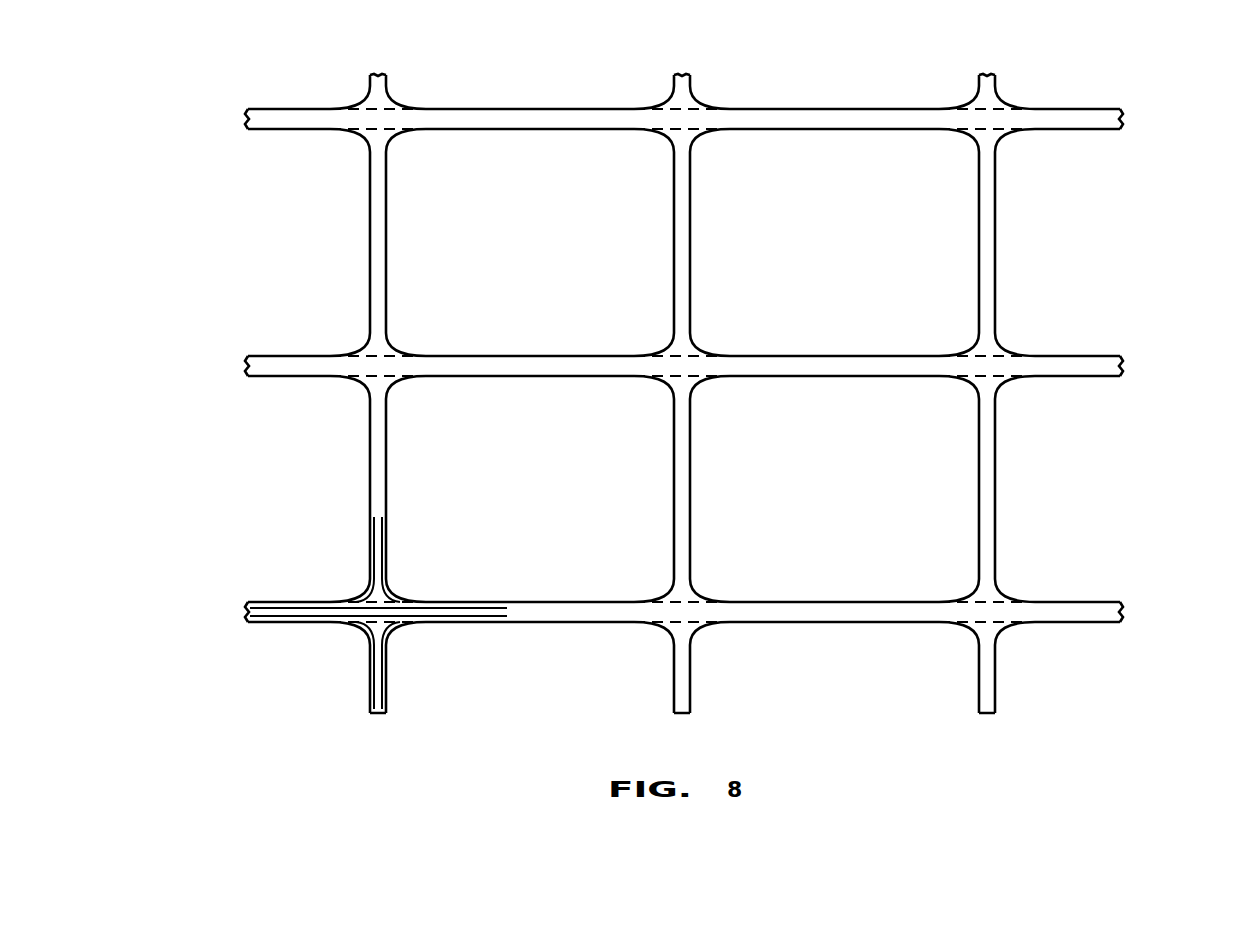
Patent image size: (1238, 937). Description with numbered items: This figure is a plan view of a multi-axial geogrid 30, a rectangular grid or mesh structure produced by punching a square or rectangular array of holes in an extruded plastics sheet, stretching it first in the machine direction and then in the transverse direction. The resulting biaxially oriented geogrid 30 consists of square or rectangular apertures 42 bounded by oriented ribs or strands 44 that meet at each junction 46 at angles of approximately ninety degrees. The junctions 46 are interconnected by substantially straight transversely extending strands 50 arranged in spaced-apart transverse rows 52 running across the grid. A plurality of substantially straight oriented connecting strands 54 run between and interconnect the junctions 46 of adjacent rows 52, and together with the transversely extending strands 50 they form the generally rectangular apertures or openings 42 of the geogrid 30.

The multi-axial geogrid 30 is at (345, 214).
The apertures 42 is at (548, 243).
The strands 44 is at (502, 115).
The junction 46 is at (685, 118).
The transversely extending strands 50 is at (568, 124).
The transverse rows 52 is at (233, 612).
The connecting strands 54 is at (388, 231).